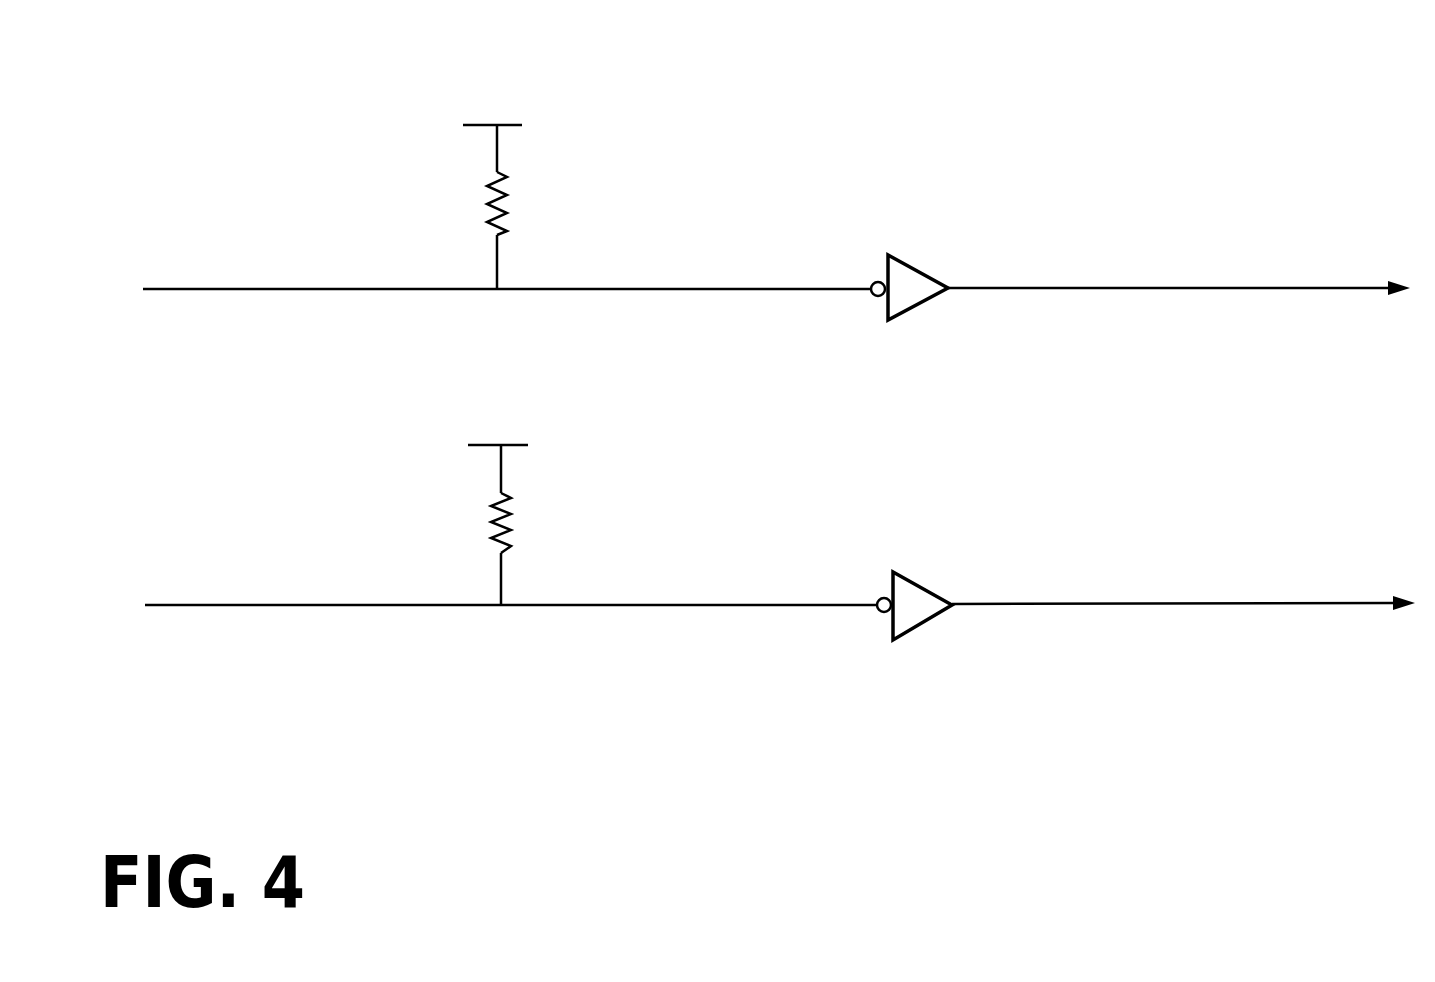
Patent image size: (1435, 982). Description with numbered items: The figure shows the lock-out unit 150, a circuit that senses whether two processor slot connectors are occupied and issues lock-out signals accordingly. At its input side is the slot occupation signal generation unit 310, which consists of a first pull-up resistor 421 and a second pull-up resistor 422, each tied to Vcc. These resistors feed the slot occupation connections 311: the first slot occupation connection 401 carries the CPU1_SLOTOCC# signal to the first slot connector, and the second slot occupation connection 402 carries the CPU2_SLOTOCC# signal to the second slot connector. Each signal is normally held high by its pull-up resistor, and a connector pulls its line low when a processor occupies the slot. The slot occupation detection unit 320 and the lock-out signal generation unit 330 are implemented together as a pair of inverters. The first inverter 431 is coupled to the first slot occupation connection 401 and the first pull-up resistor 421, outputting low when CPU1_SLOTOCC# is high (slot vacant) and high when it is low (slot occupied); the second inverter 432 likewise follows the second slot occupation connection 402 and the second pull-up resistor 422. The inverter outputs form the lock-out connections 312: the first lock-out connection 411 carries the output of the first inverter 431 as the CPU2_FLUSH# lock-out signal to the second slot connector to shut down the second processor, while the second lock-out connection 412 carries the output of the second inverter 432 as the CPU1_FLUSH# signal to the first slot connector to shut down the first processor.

The lock-out unit 150 is at (1278, 167).
The slot occupation signal generation unit 310 is at (518, 473).
The slot occupation connections 311 is at (205, 380).
The lock-out connections 312 is at (1126, 398).
The slot occupation detection unit 320 is at (917, 466).
The lock-out signal generation unit 330 is at (952, 466).
The first slot occupation connection 401 is at (262, 291).
The second slot occupation connection 402 is at (255, 607).
The first lock-out connection 411 is at (1188, 290).
The second lock-out connection 412 is at (1220, 605).
The first pull-up resistor 421 is at (498, 268).
The second pull-up resistor 422 is at (503, 582).
The first inverter 431 is at (913, 295).
The second inverter 432 is at (918, 612).